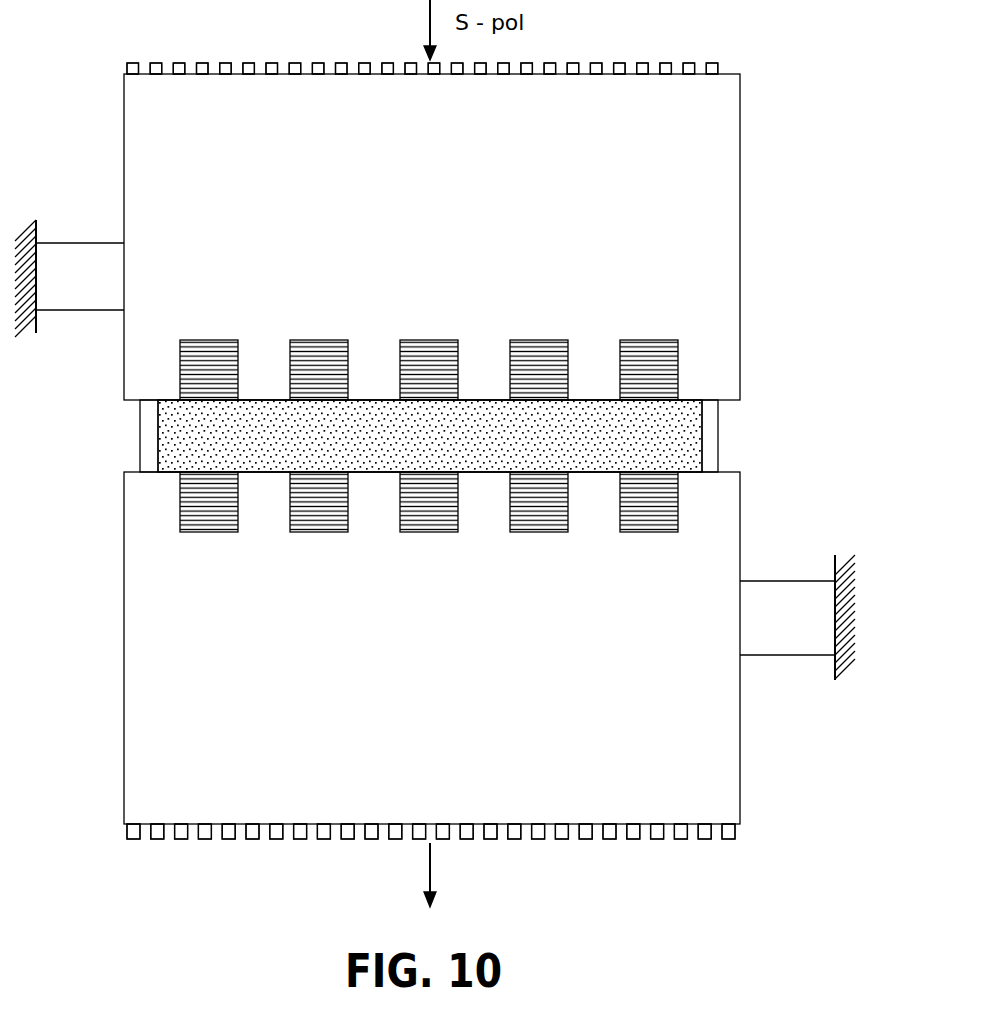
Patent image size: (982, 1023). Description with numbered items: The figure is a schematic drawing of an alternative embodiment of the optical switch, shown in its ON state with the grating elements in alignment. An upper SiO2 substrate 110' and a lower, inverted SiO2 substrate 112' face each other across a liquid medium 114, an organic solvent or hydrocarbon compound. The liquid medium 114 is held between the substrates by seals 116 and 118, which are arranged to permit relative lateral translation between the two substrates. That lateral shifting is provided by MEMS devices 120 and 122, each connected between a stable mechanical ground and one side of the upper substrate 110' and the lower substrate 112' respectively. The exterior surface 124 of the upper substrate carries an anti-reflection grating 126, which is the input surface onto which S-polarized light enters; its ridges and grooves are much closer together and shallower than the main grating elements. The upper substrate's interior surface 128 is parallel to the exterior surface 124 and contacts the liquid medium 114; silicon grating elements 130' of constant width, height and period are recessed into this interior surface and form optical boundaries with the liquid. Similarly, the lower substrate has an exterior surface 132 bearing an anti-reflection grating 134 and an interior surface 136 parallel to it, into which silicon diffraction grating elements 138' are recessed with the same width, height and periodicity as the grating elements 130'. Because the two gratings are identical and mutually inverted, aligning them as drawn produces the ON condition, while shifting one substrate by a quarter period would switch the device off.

The upper substrate 110' is at (390, 237).
The lower substrate 112' is at (390, 648).
The liquid medium 114 is at (682, 410).
The seal 116 is at (140, 393).
The seal 118 is at (720, 440).
The MEMS device 120 is at (88, 242).
The MEMS device 122 is at (780, 656).
The exterior surface 124 is at (127, 63).
The anti-reflection grating 126 is at (250, 62).
The interior surface 128 is at (273, 404).
The grating elements 130' is at (430, 436).
The exterior surface 132 is at (740, 826).
The anti-reflection grating 134 is at (583, 840).
The interior surface 136 is at (362, 472).
The diffraction grating elements 138' is at (429, 487).